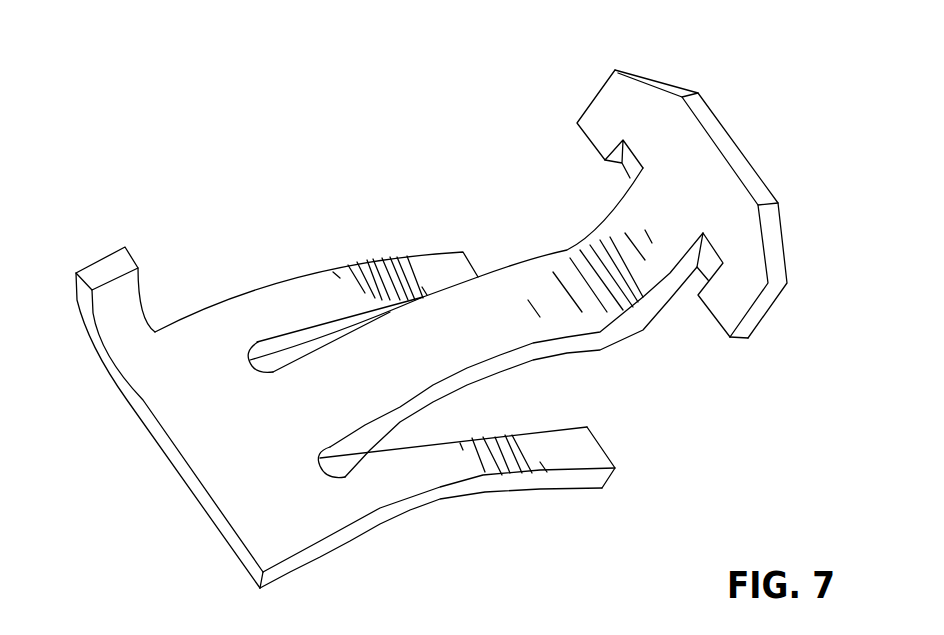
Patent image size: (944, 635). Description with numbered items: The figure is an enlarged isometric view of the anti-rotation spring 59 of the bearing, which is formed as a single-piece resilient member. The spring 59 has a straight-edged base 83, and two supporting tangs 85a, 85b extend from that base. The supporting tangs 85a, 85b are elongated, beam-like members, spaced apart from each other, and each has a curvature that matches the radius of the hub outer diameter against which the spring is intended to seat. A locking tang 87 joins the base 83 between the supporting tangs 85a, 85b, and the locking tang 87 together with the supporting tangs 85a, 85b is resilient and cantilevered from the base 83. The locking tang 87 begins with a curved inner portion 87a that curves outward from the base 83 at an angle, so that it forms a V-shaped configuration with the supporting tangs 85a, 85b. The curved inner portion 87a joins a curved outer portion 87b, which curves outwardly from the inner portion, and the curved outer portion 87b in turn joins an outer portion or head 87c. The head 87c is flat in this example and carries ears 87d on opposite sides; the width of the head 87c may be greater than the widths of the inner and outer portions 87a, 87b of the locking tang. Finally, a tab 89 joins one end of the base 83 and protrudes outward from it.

The anti-rotation spring 59 is at (708, 60).
The base 83 is at (188, 477).
The supporting tang 85a is at (287, 278).
The supporting tang 85b is at (450, 500).
The locking tang 87 is at (713, 241).
The curved inner portion 87a is at (345, 443).
The curved outer portion 87b is at (603, 217).
The head 87c is at (732, 152).
The ears 87d is at (765, 303).
The tab 89 is at (112, 265).